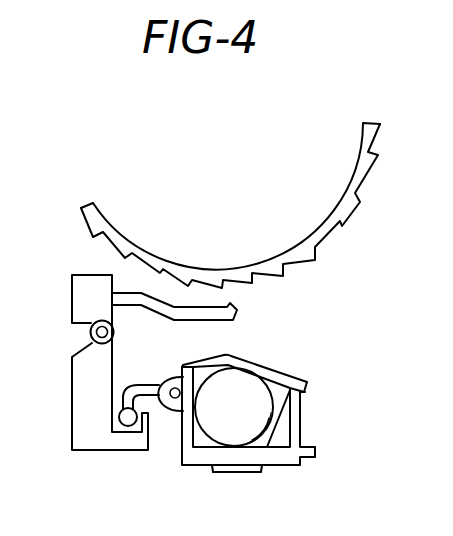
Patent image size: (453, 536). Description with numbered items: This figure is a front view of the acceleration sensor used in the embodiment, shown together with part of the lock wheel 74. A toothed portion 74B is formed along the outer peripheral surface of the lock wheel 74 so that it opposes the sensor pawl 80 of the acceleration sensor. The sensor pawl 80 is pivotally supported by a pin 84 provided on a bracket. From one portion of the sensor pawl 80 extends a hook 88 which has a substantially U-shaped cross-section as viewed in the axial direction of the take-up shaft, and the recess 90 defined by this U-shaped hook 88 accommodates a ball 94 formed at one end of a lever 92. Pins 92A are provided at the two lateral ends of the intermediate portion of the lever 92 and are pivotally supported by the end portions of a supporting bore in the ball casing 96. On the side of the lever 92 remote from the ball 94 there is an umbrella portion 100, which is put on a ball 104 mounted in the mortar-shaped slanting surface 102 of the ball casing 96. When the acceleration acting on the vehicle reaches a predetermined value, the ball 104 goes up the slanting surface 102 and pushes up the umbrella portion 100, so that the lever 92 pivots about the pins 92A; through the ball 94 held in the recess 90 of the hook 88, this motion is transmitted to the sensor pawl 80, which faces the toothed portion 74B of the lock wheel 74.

The lock wheel 74 is at (253, 205).
The toothed portion 74B is at (359, 205).
The sensor pawl 80 is at (239, 321).
The pin 84 is at (90, 333).
The hook 88 is at (100, 446).
The recess 90 is at (129, 433).
The lever 92 is at (307, 376).
The pins 92A is at (172, 381).
The ball 94 is at (153, 430).
The ball casing 96 is at (285, 472).
The umbrella portion 100 is at (268, 364).
The slanting surface 102 is at (237, 473).
The ball 104 is at (276, 405).